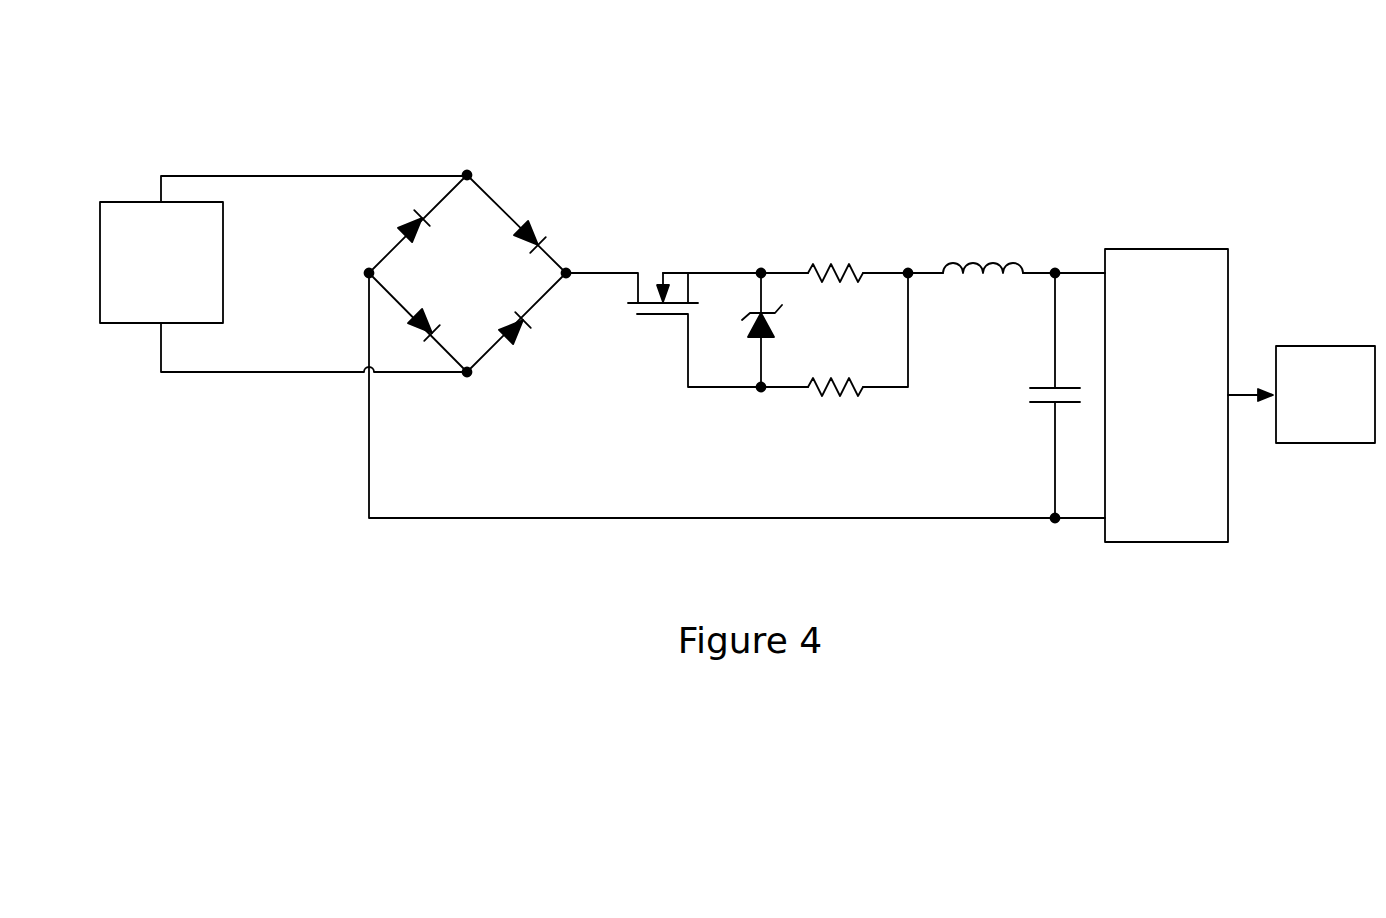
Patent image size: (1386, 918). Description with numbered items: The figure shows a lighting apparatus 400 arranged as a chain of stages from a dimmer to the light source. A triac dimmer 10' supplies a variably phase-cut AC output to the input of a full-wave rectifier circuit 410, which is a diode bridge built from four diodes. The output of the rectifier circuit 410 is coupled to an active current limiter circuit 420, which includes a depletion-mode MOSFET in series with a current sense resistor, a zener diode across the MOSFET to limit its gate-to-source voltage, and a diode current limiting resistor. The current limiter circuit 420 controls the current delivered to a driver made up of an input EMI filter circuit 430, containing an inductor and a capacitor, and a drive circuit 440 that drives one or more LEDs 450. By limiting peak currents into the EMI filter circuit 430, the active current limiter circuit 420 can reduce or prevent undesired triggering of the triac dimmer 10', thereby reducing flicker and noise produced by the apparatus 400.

The apparatus 400 is at (1107, 72).
The triac dimmer 10' is at (193, 253).
The full-wave rectifier circuit 410 is at (515, 147).
The active current limiter circuit 420 is at (840, 179).
The EMI filter circuit 430 is at (1006, 186).
The drive circuit 440 is at (1167, 249).
The LEDs 450 is at (1325, 346).